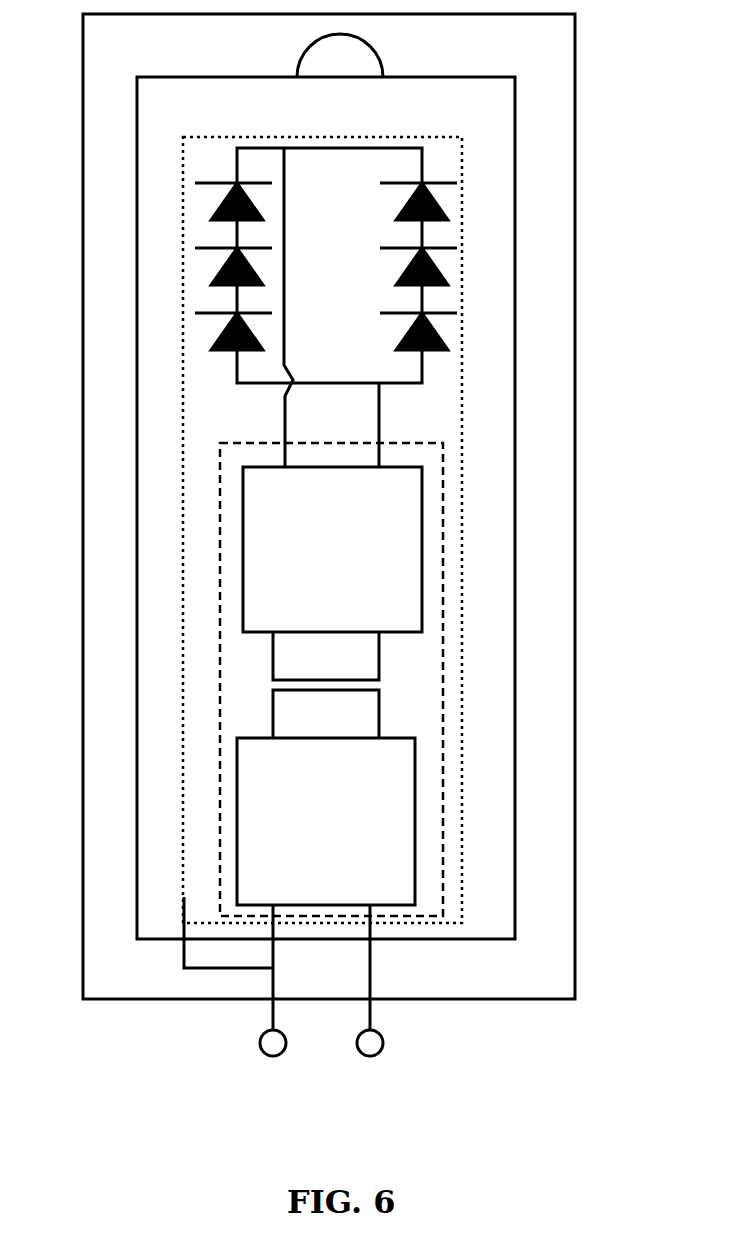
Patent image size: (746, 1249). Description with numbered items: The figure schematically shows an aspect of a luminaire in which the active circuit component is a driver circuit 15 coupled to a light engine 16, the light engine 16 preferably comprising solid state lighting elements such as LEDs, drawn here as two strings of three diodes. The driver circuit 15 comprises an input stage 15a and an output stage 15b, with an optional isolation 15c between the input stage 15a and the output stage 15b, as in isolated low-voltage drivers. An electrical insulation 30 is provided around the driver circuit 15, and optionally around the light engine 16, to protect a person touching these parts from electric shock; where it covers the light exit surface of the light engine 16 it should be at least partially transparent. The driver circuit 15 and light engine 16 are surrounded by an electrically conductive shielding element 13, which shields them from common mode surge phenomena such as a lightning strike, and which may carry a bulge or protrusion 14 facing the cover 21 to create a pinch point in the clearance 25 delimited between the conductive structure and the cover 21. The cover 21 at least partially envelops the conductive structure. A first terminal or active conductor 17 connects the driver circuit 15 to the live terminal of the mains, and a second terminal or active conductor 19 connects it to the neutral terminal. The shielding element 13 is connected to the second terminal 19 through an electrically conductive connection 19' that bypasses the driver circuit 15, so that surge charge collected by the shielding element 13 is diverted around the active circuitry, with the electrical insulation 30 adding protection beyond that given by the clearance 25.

The clearance 25 is at (555, 92).
The cover 21 is at (575, 150).
The bulge or protrusion 14 is at (335, 57).
The shielding element 13 is at (500, 412).
The light engine 16 is at (440, 272).
The driver circuit 15 is at (443, 608).
The output stage 15b is at (243, 534).
The isolation 15c is at (404, 693).
The input stage 15a is at (237, 786).
The electrical insulation 30 is at (462, 754).
The electrically conductive connection 19' is at (227, 984).
The second terminal or active conductor 19 is at (266, 1025).
The first terminal or active conductor 17 is at (372, 1047).